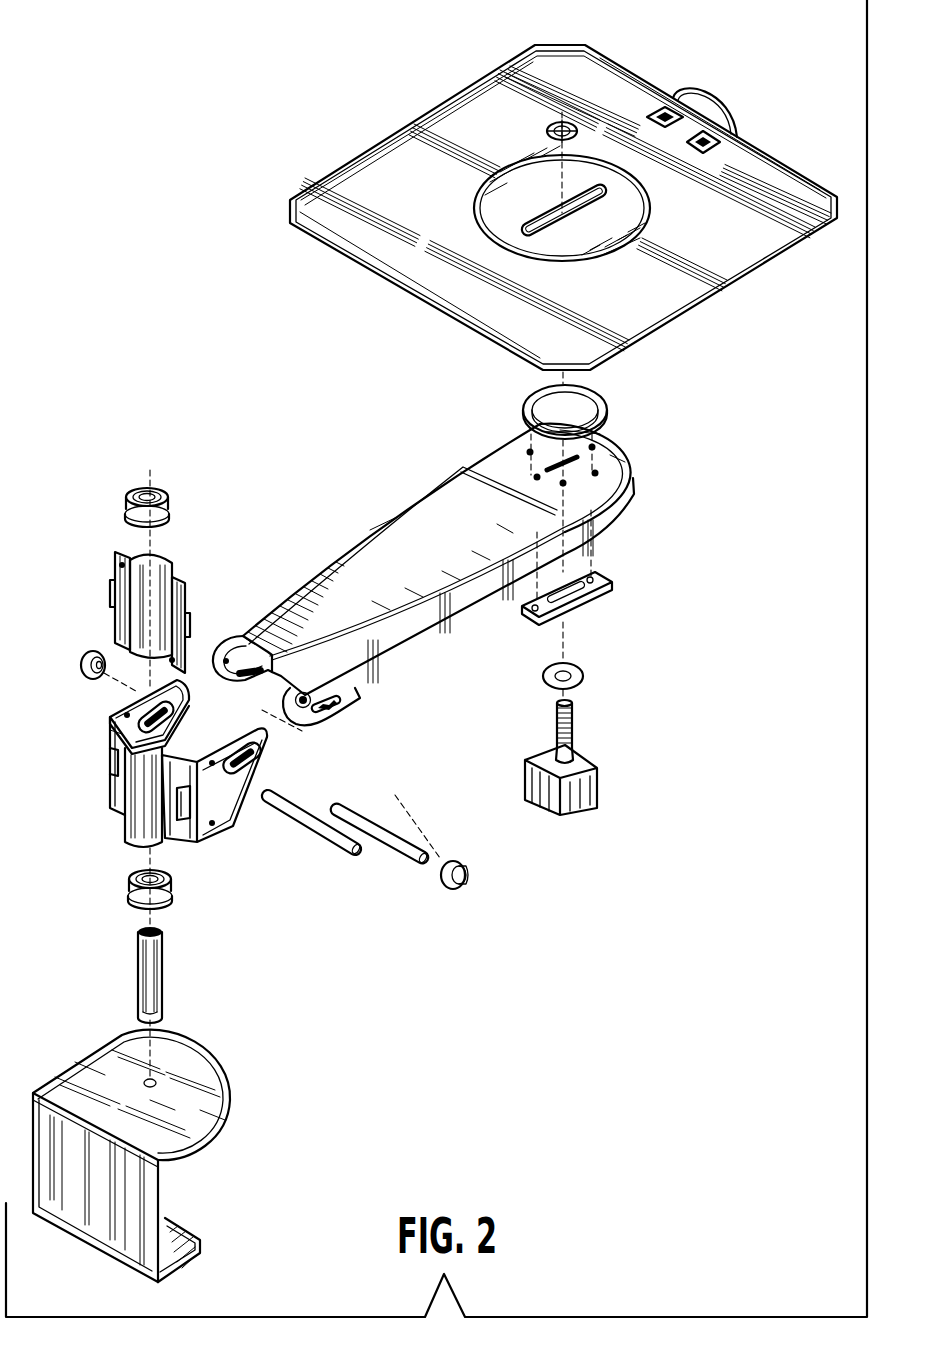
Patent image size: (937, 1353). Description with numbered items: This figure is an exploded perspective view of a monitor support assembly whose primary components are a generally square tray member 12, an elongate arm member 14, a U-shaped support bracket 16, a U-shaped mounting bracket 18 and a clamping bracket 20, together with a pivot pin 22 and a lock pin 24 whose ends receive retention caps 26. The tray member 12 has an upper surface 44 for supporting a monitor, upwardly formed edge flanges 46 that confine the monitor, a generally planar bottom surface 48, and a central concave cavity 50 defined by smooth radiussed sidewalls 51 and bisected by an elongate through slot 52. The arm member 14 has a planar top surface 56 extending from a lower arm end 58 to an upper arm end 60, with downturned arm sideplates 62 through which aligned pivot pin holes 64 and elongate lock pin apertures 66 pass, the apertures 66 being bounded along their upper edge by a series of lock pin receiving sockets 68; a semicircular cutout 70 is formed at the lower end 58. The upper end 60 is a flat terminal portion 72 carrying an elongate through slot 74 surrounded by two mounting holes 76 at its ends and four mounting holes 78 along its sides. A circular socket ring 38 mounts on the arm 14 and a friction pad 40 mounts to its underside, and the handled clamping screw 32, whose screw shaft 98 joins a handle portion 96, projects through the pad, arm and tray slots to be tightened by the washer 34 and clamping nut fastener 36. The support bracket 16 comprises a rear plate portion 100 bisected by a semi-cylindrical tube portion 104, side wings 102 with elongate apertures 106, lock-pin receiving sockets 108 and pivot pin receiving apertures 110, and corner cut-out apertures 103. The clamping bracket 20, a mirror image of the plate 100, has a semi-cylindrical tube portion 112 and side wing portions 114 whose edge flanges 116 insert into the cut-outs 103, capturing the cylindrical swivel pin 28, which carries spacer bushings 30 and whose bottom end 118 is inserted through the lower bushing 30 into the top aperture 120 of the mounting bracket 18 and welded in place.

The tray member 12 is at (563, 358).
The arm member 14 is at (460, 616).
The support bracket 16 is at (153, 775).
The mounting bracket 18 is at (151, 1147).
The clamping bracket 20 is at (147, 589).
The pivot pin 22 is at (317, 832).
The lock pin 24 is at (392, 833).
The retention caps 26 is at (82, 656).
The swivel pin 28 is at (133, 985).
The spacer bushings 30 is at (161, 486).
The handled clamping screw 32 is at (585, 784).
The washer 34 is at (585, 675).
The clamping nut fastener 36 is at (547, 121).
The circular socket ring 38 is at (612, 382).
The friction pad 40 is at (614, 601).
The upper surface 44 is at (737, 183).
The edge flanges 46 is at (797, 163).
The bottom surface 48 is at (408, 298).
The central concave cavity 50 is at (606, 186).
The radiussed sidewalls 51 is at (650, 207).
The through slot 52 is at (527, 227).
The top surface 56 is at (383, 545).
The lower arm end 58 is at (241, 634).
The upper arm end 60 is at (628, 446).
The arm sideplates 62 is at (440, 632).
The pivot pin holes 64 is at (302, 666).
The lock pin apertures 66 is at (262, 684).
The lock pin receiving sockets 68 is at (315, 704).
The semicircular cutout 70 is at (246, 681).
The flat terminal portion 72 is at (622, 463).
The through slot 74 is at (566, 465).
The mounting holes 76 is at (534, 475).
The mounting holes 78 is at (528, 449).
The handle portion 96 is at (562, 802).
The screw shaft 98 is at (557, 724).
The rear plate portion 100 is at (112, 790).
The side wings 102 is at (222, 800).
The cut-out apertures 103 is at (113, 762).
The semi-cylindrical tube portion 104 is at (120, 735).
The elongate aperture 106 is at (118, 716).
The lock-pin receiving sockets 108 is at (152, 698).
The pivot pin receiving apertures 110 is at (215, 758).
The semi-cylindrical tube portion 112 is at (152, 556).
The side wing portions 114 is at (116, 578).
The edge flange 116 is at (112, 593).
The bottom end 118 is at (147, 1020).
The top aperture 120 is at (156, 1079).